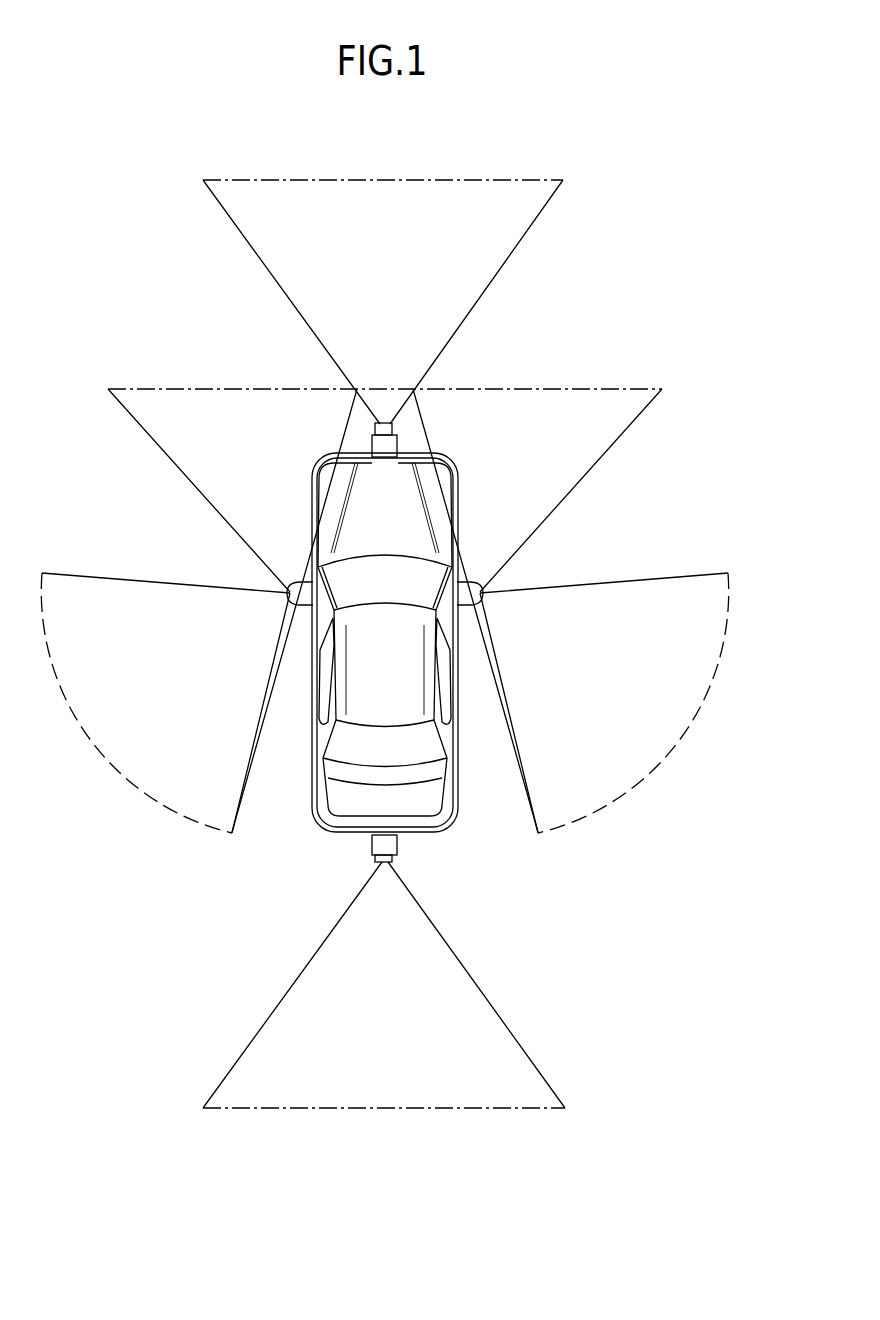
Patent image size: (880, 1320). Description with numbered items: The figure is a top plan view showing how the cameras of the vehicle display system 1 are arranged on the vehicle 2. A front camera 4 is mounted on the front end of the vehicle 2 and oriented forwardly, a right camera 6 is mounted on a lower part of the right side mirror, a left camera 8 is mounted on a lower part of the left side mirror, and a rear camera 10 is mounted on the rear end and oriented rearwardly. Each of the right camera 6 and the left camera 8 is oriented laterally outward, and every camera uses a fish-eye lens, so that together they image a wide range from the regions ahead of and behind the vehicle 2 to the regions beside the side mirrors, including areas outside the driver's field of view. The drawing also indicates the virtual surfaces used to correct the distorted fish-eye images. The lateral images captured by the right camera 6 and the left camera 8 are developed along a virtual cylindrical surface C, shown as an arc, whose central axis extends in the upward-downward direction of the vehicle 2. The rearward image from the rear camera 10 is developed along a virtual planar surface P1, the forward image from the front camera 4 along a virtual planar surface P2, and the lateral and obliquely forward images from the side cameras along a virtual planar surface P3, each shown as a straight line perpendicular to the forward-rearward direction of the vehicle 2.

The vehicle display system 1 is at (503, 373).
The vehicle 2 is at (461, 487).
The front camera 4 is at (372, 438).
The right camera 6 is at (483, 590).
The left camera 8 is at (287, 590).
The rear camera 10 is at (390, 864).
The virtual planar surface P1 is at (396, 1110).
The virtual planar surface P2 is at (395, 180).
The virtual planar surface P3 is at (180, 388).
The virtual cylindrical surface C is at (88, 740).